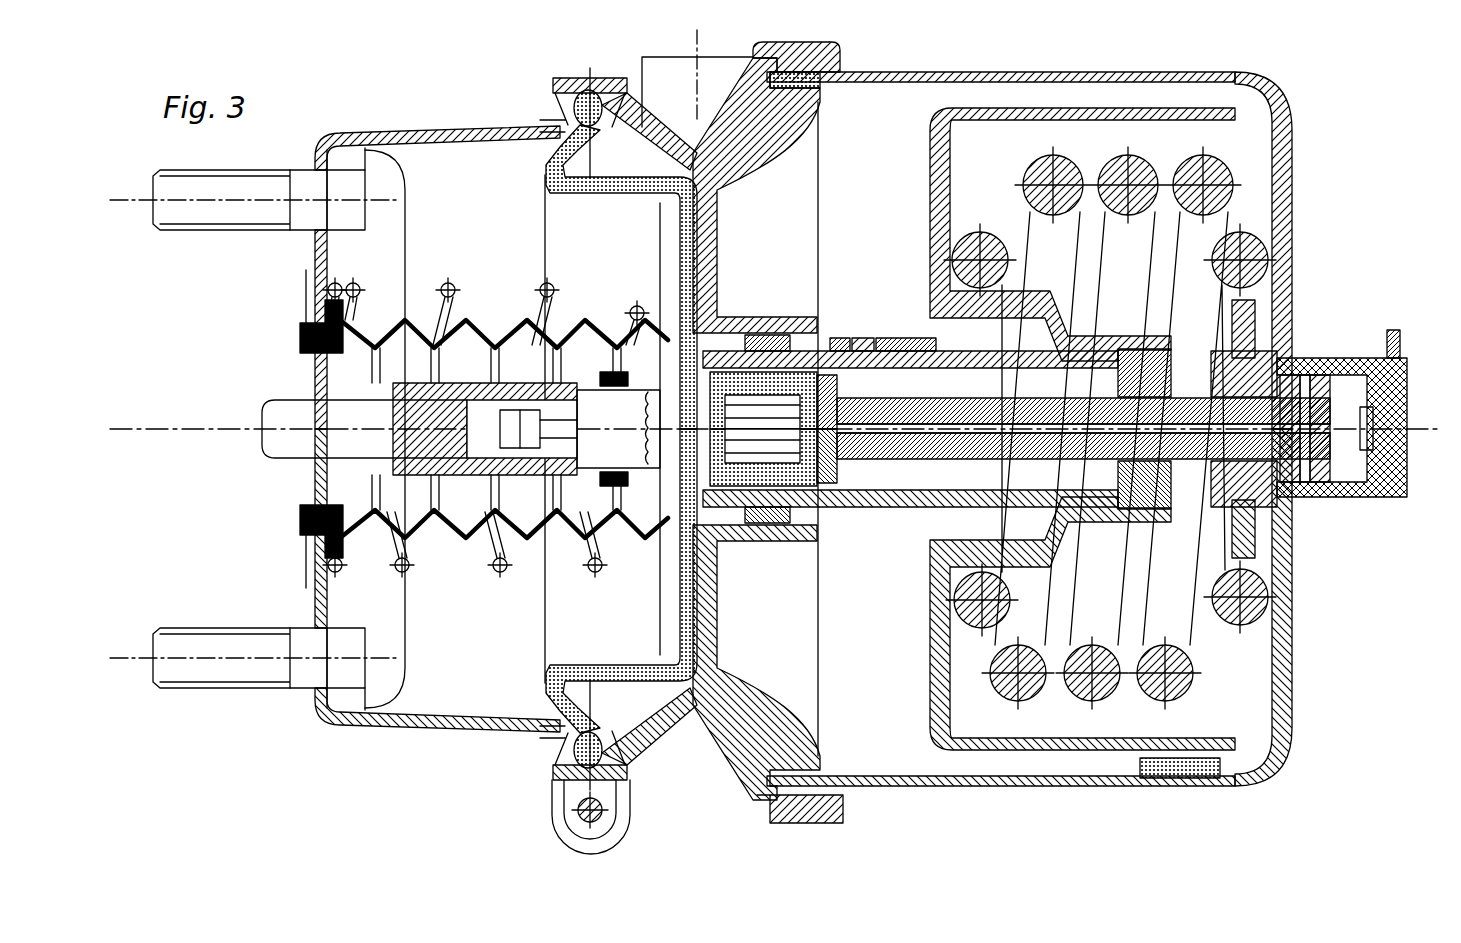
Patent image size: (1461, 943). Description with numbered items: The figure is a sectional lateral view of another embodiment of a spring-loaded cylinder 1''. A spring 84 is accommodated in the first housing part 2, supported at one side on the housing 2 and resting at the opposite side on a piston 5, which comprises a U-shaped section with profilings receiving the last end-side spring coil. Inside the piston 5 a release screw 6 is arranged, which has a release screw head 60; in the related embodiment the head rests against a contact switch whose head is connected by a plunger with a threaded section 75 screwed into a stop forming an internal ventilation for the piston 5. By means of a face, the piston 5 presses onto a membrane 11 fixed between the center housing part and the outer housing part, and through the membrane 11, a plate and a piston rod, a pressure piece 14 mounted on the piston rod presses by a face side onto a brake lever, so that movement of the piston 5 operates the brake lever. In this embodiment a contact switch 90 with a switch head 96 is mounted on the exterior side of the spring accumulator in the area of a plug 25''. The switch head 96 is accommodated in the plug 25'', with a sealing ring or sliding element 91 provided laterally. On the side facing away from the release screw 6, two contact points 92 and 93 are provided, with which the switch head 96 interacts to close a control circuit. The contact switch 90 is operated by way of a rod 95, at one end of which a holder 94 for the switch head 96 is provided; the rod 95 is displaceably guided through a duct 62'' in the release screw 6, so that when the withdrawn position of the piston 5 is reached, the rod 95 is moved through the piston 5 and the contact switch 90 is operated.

The spring-loaded cylinder 1'' is at (1293, 411).
The first housing part 2 is at (890, 72).
The piston 5 is at (1000, 110).
The release screw 6 is at (985, 482).
The membrane 11 is at (500, 128).
The pressure piece 14 is at (266, 447).
The plug 25'' is at (1097, 508).
The release screw head 60 is at (885, 350).
The duct 62'' is at (1195, 800).
The threaded section 75 is at (838, 350).
The spring 84 is at (1118, 160).
The contact switch 90 is at (1298, 355).
The sealing ring or sliding element 91 is at (1358, 355).
The contact point 92 is at (1378, 355).
The contact point 93 is at (1390, 500).
The holder 94 is at (1322, 500).
The rod 95 is at (858, 350).
The switch head 96 is at (1296, 500).